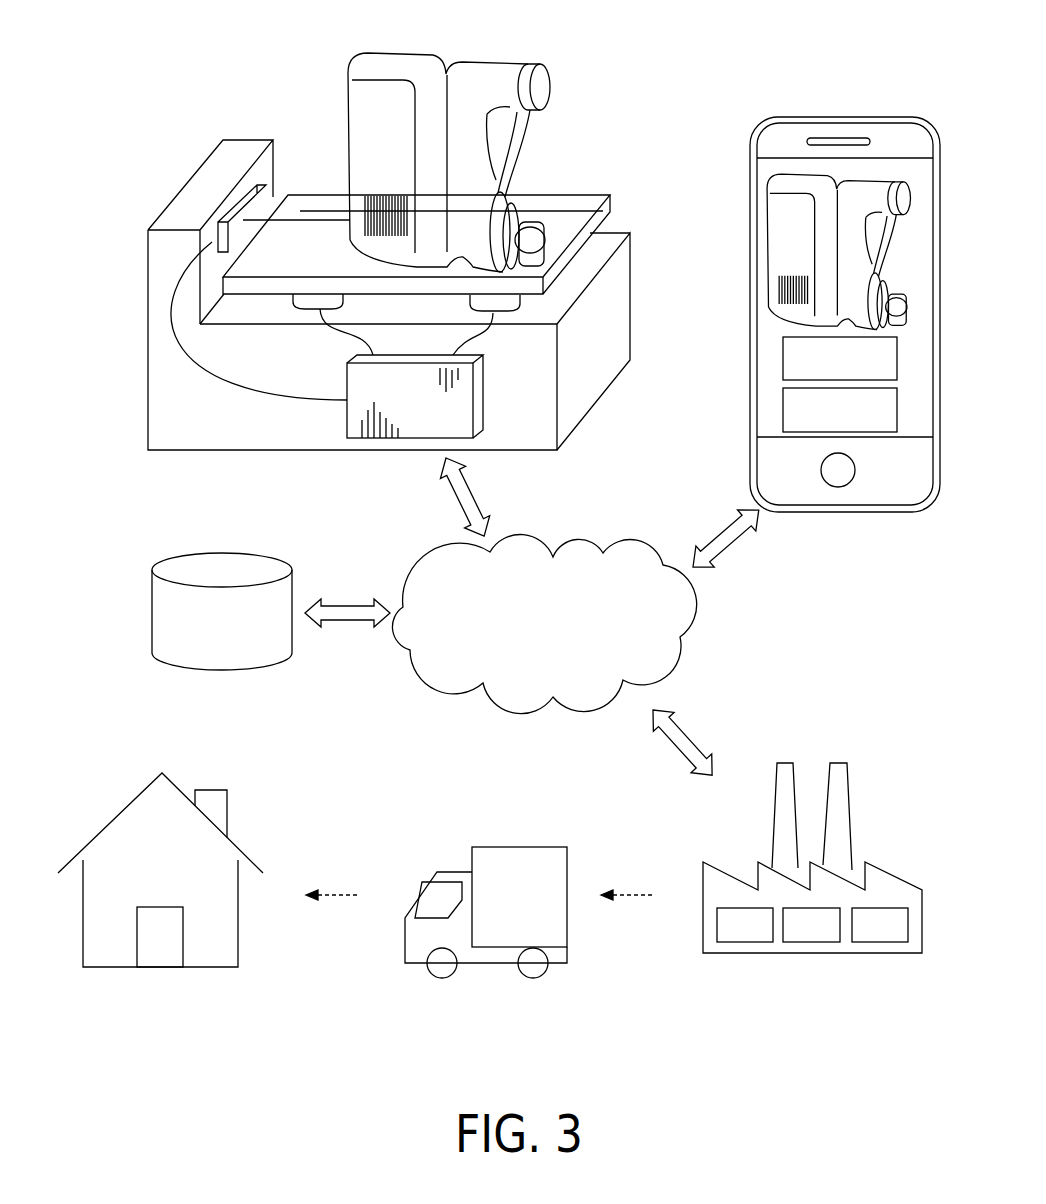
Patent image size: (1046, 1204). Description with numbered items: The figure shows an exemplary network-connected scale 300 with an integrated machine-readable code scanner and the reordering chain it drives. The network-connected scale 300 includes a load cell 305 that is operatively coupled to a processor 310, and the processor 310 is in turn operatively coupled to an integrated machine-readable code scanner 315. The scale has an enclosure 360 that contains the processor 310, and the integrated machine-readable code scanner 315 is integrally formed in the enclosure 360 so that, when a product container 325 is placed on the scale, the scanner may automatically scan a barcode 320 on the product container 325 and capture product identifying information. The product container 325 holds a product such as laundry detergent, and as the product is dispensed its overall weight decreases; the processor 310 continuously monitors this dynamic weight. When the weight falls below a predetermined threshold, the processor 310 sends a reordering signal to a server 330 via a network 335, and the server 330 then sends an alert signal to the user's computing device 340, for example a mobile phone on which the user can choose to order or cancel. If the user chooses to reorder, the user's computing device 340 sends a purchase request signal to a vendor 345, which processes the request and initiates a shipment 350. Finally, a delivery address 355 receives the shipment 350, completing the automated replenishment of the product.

The network-connected scale 300 is at (190, 104).
The load cell 305 is at (294, 297).
The processor 310 is at (345, 423).
The integrated machine-readable code scanner 315 is at (230, 205).
The barcode 320 is at (419, 212).
The product container 325 is at (403, 125).
The server 330 is at (293, 582).
The network 335 is at (564, 632).
The user's computing device 340 is at (750, 193).
The vendor 345 is at (728, 953).
The shipment 350 is at (448, 978).
The delivery address 355 is at (213, 967).
The enclosure 360 is at (617, 377).